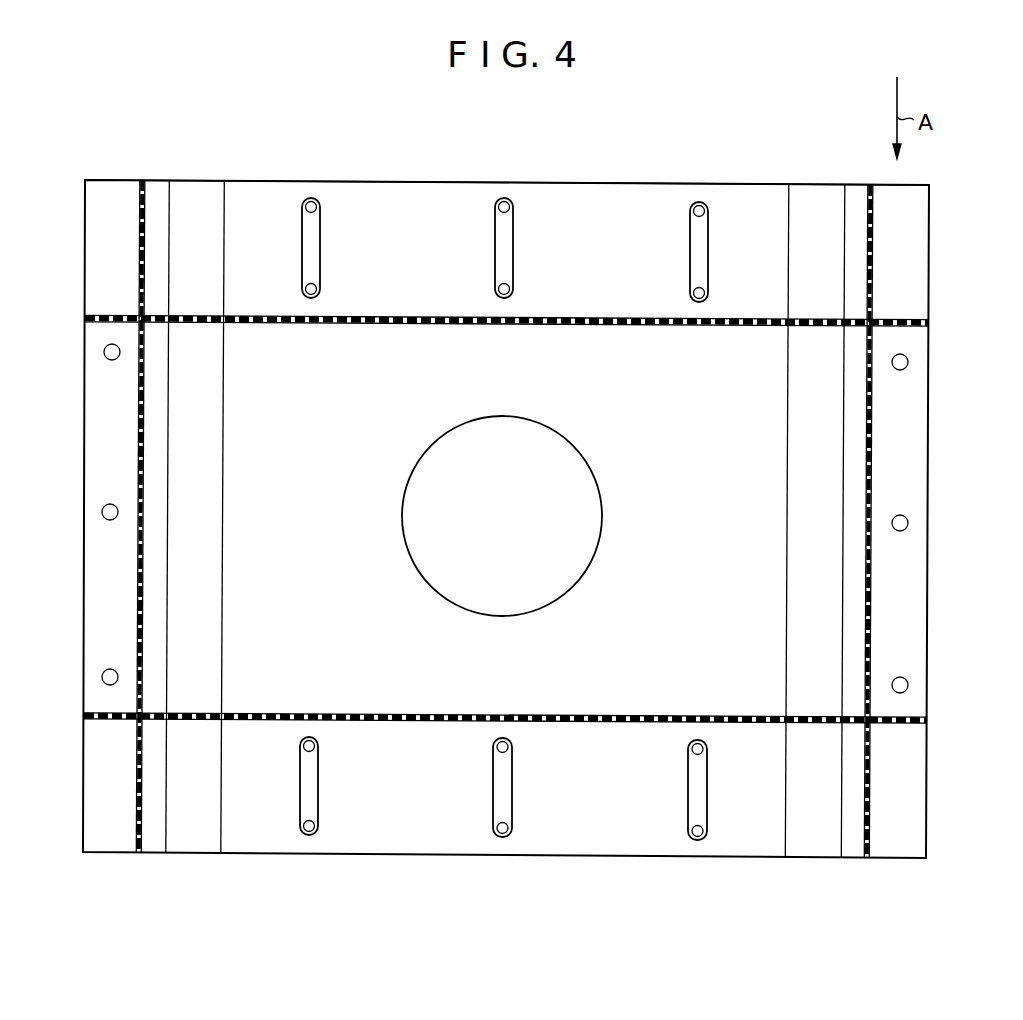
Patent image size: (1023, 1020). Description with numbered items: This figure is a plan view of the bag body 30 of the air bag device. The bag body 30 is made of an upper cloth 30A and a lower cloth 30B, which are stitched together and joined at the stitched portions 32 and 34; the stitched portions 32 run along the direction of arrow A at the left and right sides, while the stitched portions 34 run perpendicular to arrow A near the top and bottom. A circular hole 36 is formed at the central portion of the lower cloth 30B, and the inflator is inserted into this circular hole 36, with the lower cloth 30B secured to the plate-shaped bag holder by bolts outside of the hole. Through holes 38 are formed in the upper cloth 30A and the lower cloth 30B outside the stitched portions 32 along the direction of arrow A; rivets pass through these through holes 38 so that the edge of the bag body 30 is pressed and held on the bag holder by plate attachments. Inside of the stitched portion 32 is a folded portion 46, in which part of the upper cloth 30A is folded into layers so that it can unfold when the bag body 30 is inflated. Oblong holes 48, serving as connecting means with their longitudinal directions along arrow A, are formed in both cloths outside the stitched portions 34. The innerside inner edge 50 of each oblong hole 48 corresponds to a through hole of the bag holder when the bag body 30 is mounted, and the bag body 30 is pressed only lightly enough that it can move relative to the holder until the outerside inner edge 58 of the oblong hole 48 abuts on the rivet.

The bag body 30 is at (608, 165).
The upper cloth 30A is at (593, 225).
The lower cloth 30B is at (640, 225).
The stitched portion 32 is at (138, 583).
The stitched portion 34 is at (437, 327).
The circular hole 36 is at (475, 598).
The through holes 38 is at (103, 352).
The folded portion 46 is at (200, 830).
The oblong holes 48 is at (312, 222).
The innerside inner edge 50 is at (318, 292).
The outerside inner edge 58 is at (322, 208).